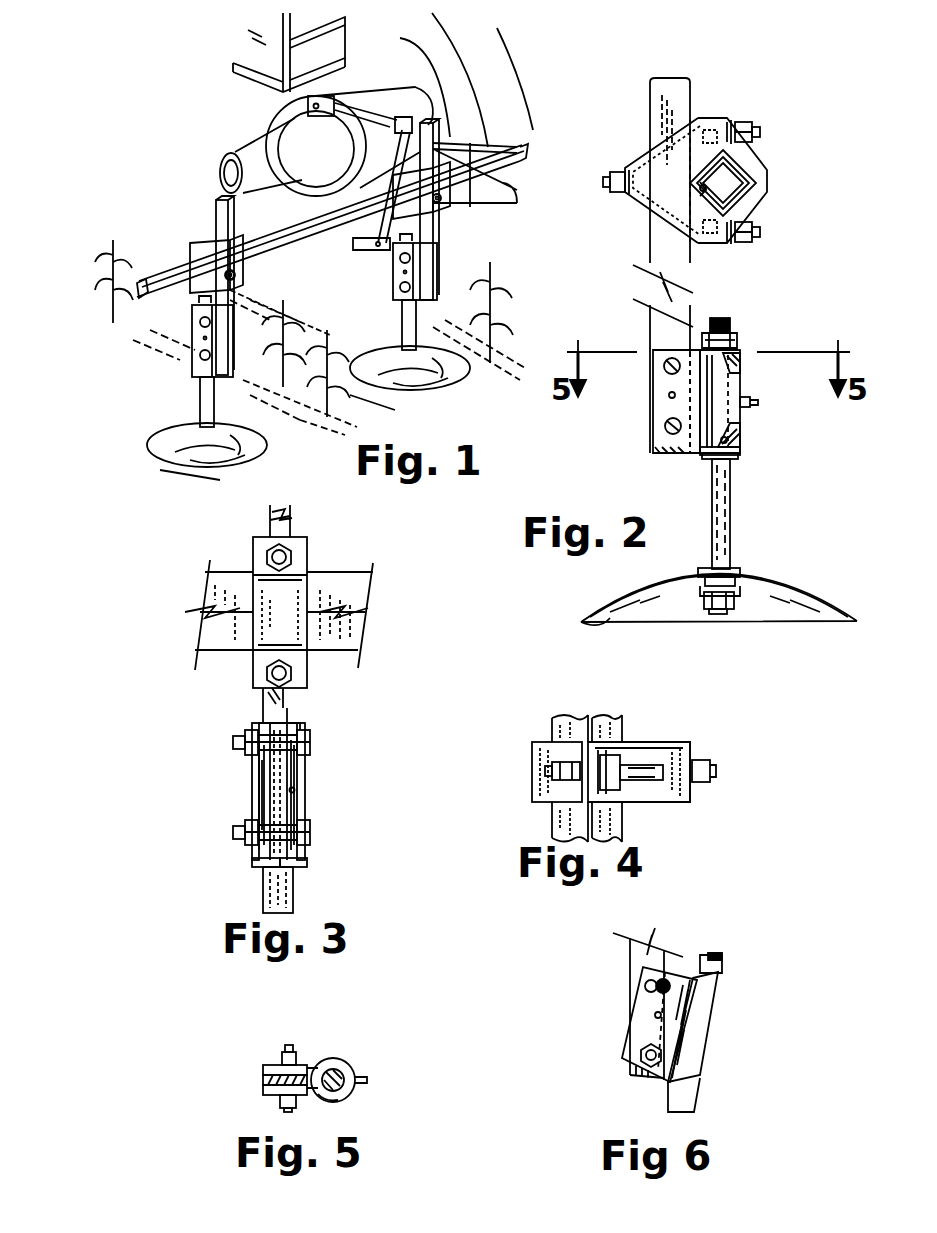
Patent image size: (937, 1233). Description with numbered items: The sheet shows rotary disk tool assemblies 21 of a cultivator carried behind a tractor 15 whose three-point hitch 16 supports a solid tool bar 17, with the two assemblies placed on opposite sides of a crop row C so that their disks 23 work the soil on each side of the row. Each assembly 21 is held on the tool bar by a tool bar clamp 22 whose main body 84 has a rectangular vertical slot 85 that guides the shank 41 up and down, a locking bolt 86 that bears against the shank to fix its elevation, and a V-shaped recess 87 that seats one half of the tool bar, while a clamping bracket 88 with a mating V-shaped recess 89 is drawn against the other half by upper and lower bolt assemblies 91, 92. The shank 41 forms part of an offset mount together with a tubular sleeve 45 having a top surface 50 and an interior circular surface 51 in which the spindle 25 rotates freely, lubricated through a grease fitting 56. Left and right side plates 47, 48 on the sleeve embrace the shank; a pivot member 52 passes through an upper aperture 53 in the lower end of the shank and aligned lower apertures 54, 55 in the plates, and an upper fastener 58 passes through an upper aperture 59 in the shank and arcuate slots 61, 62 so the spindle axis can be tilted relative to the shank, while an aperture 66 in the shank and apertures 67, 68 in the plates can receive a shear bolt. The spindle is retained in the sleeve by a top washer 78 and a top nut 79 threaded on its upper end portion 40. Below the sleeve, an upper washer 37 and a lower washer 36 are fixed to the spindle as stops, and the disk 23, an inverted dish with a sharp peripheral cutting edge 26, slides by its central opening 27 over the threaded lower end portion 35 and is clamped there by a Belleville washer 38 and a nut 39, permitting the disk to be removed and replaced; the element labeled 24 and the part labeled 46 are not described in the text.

In FIG. 1, the tractor 15 is at (238, 131).
In FIG. 1, the three-point hitch 16 is at (362, 256).
In FIG. 1, the tool bar 17 is at (176, 272).
In FIG. 2, the tool bar 17 is at (742, 170).
In FIG. 3, the tool bar 17 is at (355, 592).
In FIG. 1, the rotary disk tool assembly 21 is at (182, 358).
In FIG. 1, the tool bar clamp 22 is at (190, 236).
In FIG. 1, the rotary disk 23 is at (262, 452).
In FIG. 2, the rotary disk 23 is at (650, 598).
In FIG. 5, the pivot bolt 24 is at (333, 1072).
In FIG. 1, the spindle 25 is at (308, 363).
In FIG. 2, the spindle 25 is at (724, 498).
In FIG. 3, the spindle 25 is at (278, 890).
In FIG. 2, the peripheral cutting edge 26 is at (590, 622).
In FIG. 2, the central opening 27 is at (738, 577).
In FIG. 2, the lower end portion of spindle 35 is at (720, 612).
In FIG. 2, the lower washer 36 is at (740, 584).
In FIG. 2, the upper washer 37 is at (740, 457).
In FIG. 2, the Belleville washer 38 is at (700, 590).
In FIG. 2, the nut 39 is at (736, 602).
In FIG. 2, the upper end portion of spindle 40 is at (722, 318).
In FIG. 1, the shank 41 is at (212, 203).
In FIG. 2, the shank 41 is at (662, 248).
In FIG. 3, the shank 41 is at (284, 716).
In FIG. 4, the shank 41 is at (640, 775).
In FIG. 5, the shank 41 is at (263, 1080).
In FIG. 6, the shank 41 is at (640, 952).
In FIG. 2, the support sleeve 45 is at (742, 392).
In FIG. 5, the support sleeve 45 is at (352, 1070).
In FIG. 6, the support sleeve 45 is at (700, 1030).
In FIG. 3, the upper end 46 is at (300, 724).
In FIG. 3, the left side plate 47 is at (255, 790).
In FIG. 5, the left side plate 47 is at (276, 1067).
In FIG. 2, the right side plate 48 is at (662, 406).
In FIG. 3, the right side plate 48 is at (300, 775).
In FIG. 5, the right side plate 48 is at (272, 1090).
In FIG. 6, the right side plate 48 is at (637, 1045).
In FIG. 2, the top surface of sleeve 50 is at (742, 362).
In FIG. 2, the interior circular surface 51 is at (742, 442).
In FIG. 5, the interior circular surface 51 is at (336, 1100).
In FIG. 2, the pivot member 52 is at (672, 432).
In FIG. 3, the pivot member 52 is at (314, 831).
In FIG. 6, the pivot member 52 is at (645, 1068).
In FIG. 3, the upper aperture in shank 53 is at (268, 868).
In FIG. 3, the lower aperture in side plate 54 is at (256, 860).
In FIG. 3, the lower aperture in side plate 55 is at (305, 862).
In FIG. 2, the grease fitting 56 is at (756, 405).
In FIG. 2, the upper fastener 58 is at (668, 371).
In FIG. 3, the upper fastener 58 is at (322, 741).
In FIG. 6, the upper fastener 58 is at (646, 984).
In FIG. 3, the upper aperture in shank 59 is at (265, 718).
In FIG. 3, the arcuate slot 61 is at (260, 775).
In FIG. 6, the arcuate slot 62 is at (656, 990).
In FIG. 3, the aperture in shank 66 is at (290, 803).
In FIG. 3, the aperture in side plate 67 is at (260, 805).
In FIG. 2, the aperture in side plate 68 is at (671, 397).
In FIG. 3, the aperture in side plate 68 is at (296, 790).
In FIG. 6, the aperture in side plate 68 is at (655, 1016).
In FIG. 2, the top washer 78 is at (737, 349).
In FIG. 2, the top nut 79 is at (738, 338).
In FIG. 2, the main body of clamp 84 is at (655, 142).
In FIG. 4, the main body of clamp 84 is at (630, 745).
In FIG. 2, the vertical slot 85 is at (712, 128).
In FIG. 4, the vertical slot 85 is at (648, 768).
In FIG. 1, the locking bolt 86 is at (233, 282).
In FIG. 2, the locking bolt 86 is at (614, 172).
In FIG. 4, the locking bolt 86 is at (714, 772).
In FIG. 2, the V-shaped recess 87 is at (700, 193).
In FIG. 2, the clamping bracket 88 is at (770, 188).
In FIG. 3, the clamping bracket 88 is at (292, 597).
In FIG. 4, the clamping bracket 88 is at (611, 772).
In FIG. 2, the V-shaped recess 89 is at (748, 176).
In FIG. 2, the upper bolt assembly 91 is at (748, 124).
In FIG. 3, the upper bolt assembly 91 is at (290, 553).
In FIG. 4, the upper bolt assembly 91 is at (562, 768).
In FIG. 2, the lower bolt assembly 92 is at (752, 240).
In FIG. 3, the lower bolt assembly 92 is at (300, 672).
In FIG. 1, the crop row C is at (352, 405).